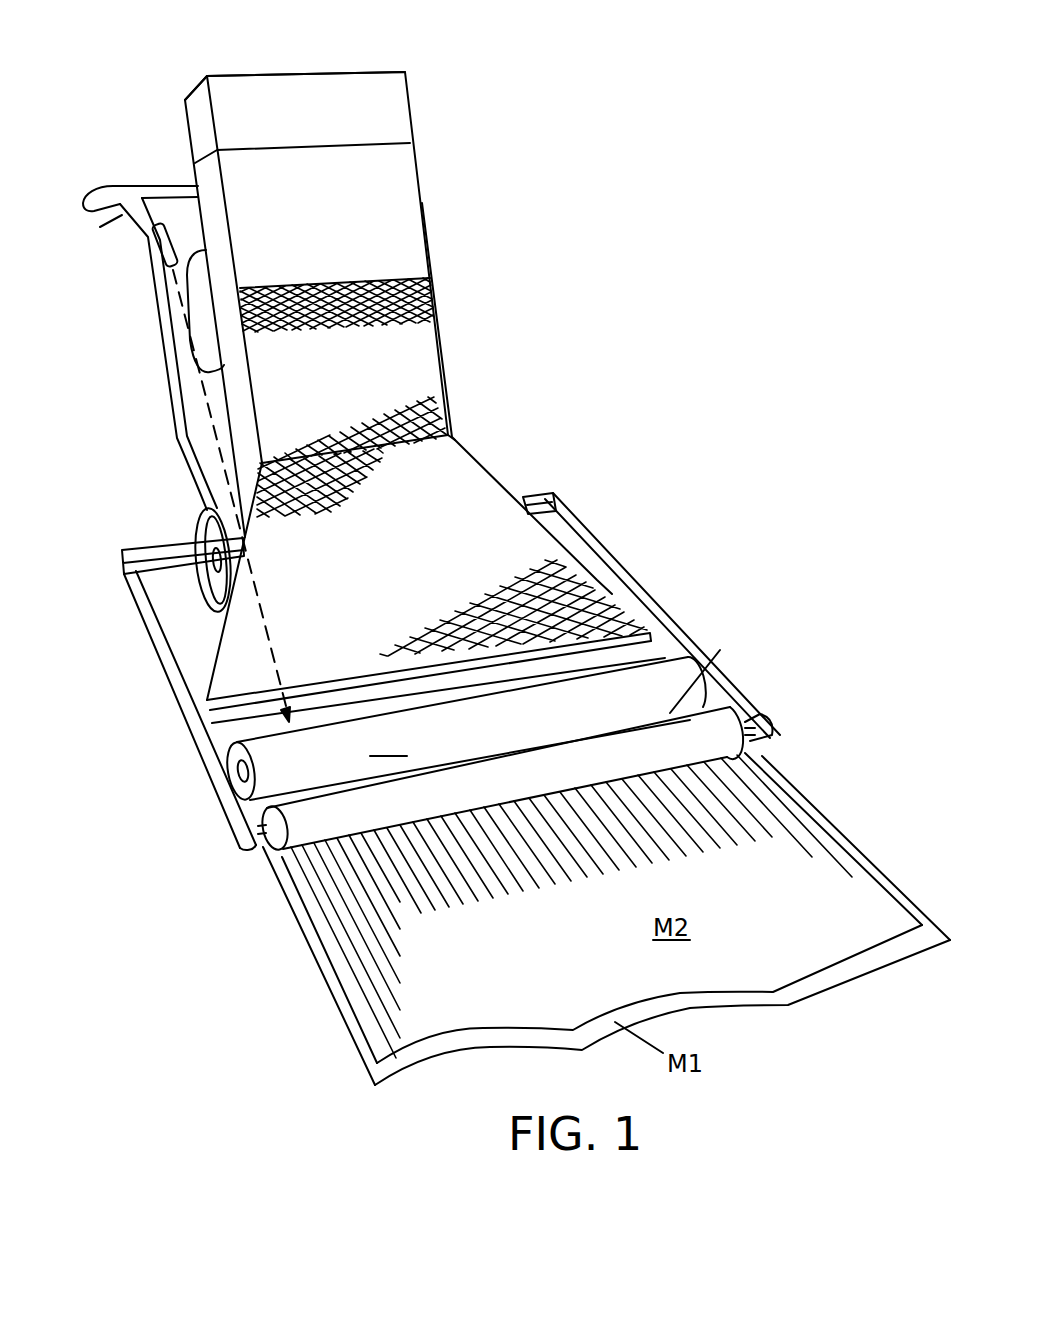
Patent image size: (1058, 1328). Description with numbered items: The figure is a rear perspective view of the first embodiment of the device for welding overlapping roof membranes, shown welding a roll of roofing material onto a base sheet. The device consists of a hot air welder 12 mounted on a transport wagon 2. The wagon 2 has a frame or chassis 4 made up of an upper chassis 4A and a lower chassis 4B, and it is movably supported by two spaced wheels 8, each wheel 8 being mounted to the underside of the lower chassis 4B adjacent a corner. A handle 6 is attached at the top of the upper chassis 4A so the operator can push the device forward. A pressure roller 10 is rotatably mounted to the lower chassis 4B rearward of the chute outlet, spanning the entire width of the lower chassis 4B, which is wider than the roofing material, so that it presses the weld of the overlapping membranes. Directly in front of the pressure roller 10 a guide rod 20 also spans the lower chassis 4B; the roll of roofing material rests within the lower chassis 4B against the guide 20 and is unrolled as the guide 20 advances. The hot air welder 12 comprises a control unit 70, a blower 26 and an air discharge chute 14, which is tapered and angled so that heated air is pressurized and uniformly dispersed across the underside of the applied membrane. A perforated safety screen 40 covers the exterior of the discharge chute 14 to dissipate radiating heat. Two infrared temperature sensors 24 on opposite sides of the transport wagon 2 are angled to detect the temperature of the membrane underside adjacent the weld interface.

The transport wagon 2 is at (606, 400).
The frame or chassis 4 is at (450, 37).
The upper chassis 4A is at (177, 438).
The lower chassis 4B is at (170, 663).
The handle 6 is at (97, 190).
The wheel 8 is at (193, 583).
The pressure roller 10 is at (722, 728).
The hot air welder 12 is at (436, 205).
The air discharge chute 14 is at (235, 732).
The guide rod 20 is at (720, 650).
The infrared temperature sensor 24 is at (160, 243).
The blower 26 is at (198, 300).
The perforated safety screen 40 is at (433, 290).
The control unit 70 is at (428, 112).